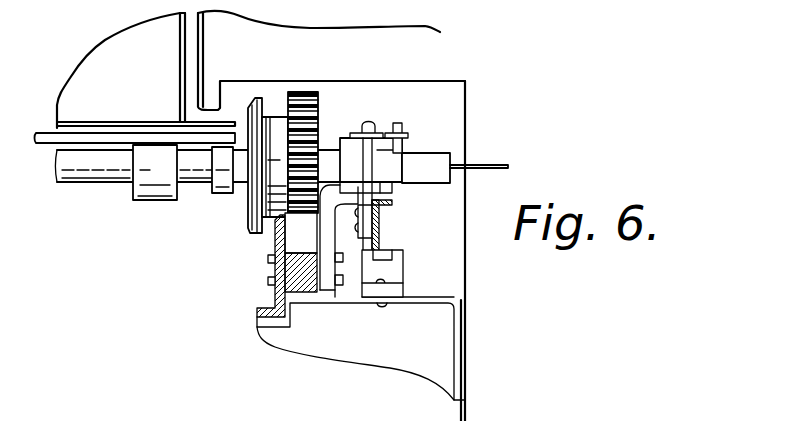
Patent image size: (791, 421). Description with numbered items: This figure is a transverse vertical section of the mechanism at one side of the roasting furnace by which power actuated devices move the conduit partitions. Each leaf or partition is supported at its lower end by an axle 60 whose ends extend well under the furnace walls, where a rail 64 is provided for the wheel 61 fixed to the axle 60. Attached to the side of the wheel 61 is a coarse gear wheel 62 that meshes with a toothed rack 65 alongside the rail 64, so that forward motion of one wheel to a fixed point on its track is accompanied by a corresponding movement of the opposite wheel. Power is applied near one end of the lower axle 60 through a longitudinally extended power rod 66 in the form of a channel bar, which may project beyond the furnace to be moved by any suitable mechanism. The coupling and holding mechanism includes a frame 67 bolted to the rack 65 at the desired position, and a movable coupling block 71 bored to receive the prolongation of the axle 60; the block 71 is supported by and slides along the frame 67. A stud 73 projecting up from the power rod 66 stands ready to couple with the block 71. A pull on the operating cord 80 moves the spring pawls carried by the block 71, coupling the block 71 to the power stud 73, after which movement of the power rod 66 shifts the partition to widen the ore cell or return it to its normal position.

The axle 60 is at (117, 183).
The wheel 61 is at (272, 118).
The coarse gear wheel 62 is at (318, 100).
The rail 64 is at (273, 222).
The toothed rack 65 is at (295, 243).
The power rod 66 is at (385, 224).
The frame 67 is at (327, 288).
The coupling block 71 is at (388, 189).
The stud 73 is at (374, 135).
The operating cord 80 is at (493, 167).